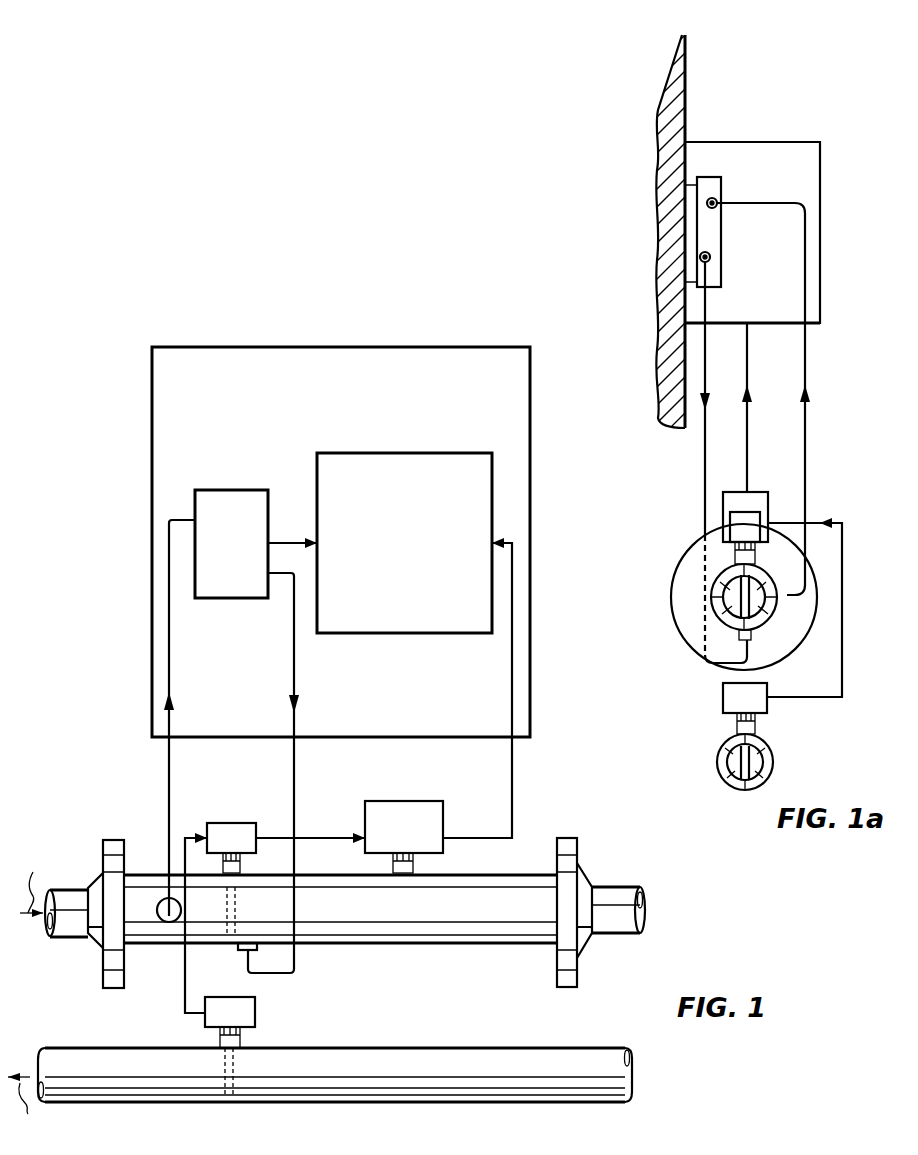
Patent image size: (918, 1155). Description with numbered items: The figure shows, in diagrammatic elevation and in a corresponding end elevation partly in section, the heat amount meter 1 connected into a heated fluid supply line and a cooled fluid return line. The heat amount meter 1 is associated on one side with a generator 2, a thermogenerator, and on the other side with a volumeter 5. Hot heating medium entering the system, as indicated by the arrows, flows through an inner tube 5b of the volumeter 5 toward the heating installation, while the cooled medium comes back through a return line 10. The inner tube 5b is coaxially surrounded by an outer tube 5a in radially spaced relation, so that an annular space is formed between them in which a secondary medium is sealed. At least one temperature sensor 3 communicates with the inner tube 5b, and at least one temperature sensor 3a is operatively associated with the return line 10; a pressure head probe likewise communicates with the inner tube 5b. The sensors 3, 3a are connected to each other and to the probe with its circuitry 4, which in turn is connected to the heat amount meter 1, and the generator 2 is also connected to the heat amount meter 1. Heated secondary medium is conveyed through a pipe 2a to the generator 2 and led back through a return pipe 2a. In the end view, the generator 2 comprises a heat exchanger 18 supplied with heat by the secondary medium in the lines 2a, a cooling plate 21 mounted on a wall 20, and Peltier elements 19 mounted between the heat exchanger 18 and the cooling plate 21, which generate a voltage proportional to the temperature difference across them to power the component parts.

In FIG. 1, the heat amount meter 1 is at (457, 625).
In FIG. 1a, the heat amount meter 1 is at (800, 143).
In FIG. 1, the generator 2 is at (235, 598).
In FIG. 1a, the generator 2 is at (716, 240).
In FIG. 1, the pipe 2a is at (197, 791).
In FIG. 1, the temperature sensor 3 is at (271, 768).
In FIG. 1a, the temperature sensor 3 is at (738, 512).
In FIG. 1, the temperature sensor 3a is at (248, 1013).
In FIG. 1a, the temperature sensor 3a is at (740, 698).
In FIG. 1, the circuitry 4 is at (463, 807).
In FIG. 1a, the circuitry 4 is at (757, 492).
In FIG. 1, the volumeter 5 is at (90, 946).
In FIG. 1, the outer tube 5a is at (477, 943).
In FIG. 1a, the outer tube 5a is at (783, 610).
In FIG. 1, the inner tube 5b is at (618, 938).
In FIG. 1a, the inner tube 5b is at (757, 587).
In FIG. 1, the return line 10 is at (529, 1055).
In FIG. 1a, the return line 10 is at (768, 762).
In FIG. 1a, the heat exchanger 18 is at (713, 200).
In FIG. 1a, the Peltier elements 19 is at (690, 204).
In FIG. 1a, the wall 20 is at (668, 248).
In FIG. 1a, the cooling plate 21 is at (687, 273).